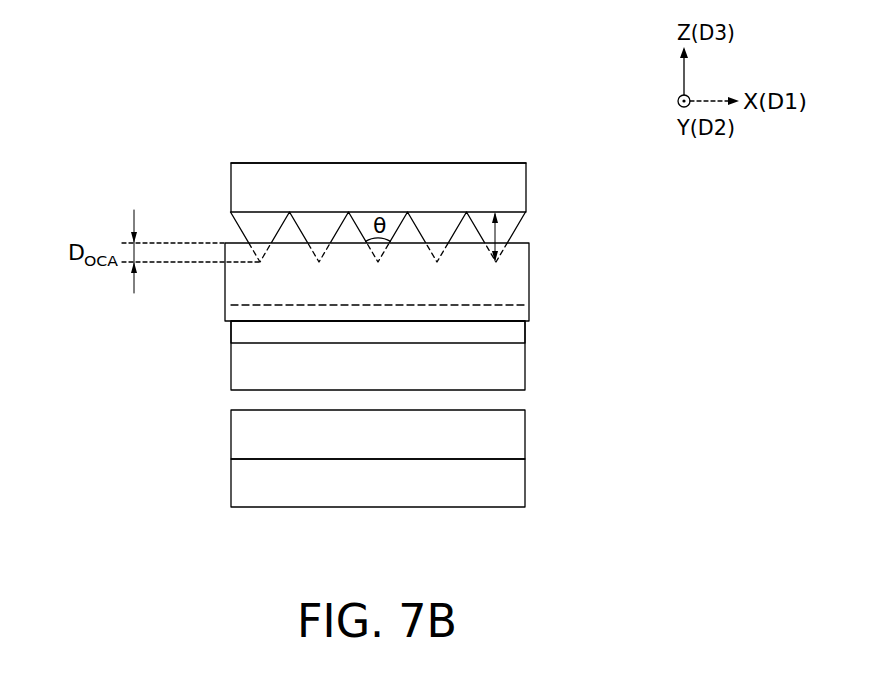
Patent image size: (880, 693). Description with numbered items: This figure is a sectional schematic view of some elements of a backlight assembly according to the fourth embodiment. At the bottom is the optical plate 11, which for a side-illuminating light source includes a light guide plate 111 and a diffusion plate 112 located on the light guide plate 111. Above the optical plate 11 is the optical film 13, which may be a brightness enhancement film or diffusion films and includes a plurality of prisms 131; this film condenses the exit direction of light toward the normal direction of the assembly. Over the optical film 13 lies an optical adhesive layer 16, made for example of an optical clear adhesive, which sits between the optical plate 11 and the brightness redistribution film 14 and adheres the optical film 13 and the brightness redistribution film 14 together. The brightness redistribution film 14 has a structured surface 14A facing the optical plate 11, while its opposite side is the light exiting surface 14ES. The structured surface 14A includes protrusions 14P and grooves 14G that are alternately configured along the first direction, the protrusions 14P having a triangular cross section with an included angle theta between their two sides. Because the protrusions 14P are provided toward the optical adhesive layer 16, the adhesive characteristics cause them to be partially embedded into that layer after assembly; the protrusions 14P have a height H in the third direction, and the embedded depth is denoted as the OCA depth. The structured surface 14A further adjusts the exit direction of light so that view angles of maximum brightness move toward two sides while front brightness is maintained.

The optical plate 11 is at (438, 467).
The light guide plate 111 is at (508, 479).
The diffusion plate 112 is at (508, 437).
The optical film 13 is at (419, 354).
The prisms 131 is at (508, 332).
The optical adhesive layer 16 is at (508, 284).
The brightness redistribution film 14 is at (395, 192).
The protrusions 14P is at (257, 220).
The grooves 14G is at (281, 222).
The structured surface 14A is at (530, 226).
The light exiting surface 14ES is at (492, 163).
The height of the protrusions H is at (503, 234).